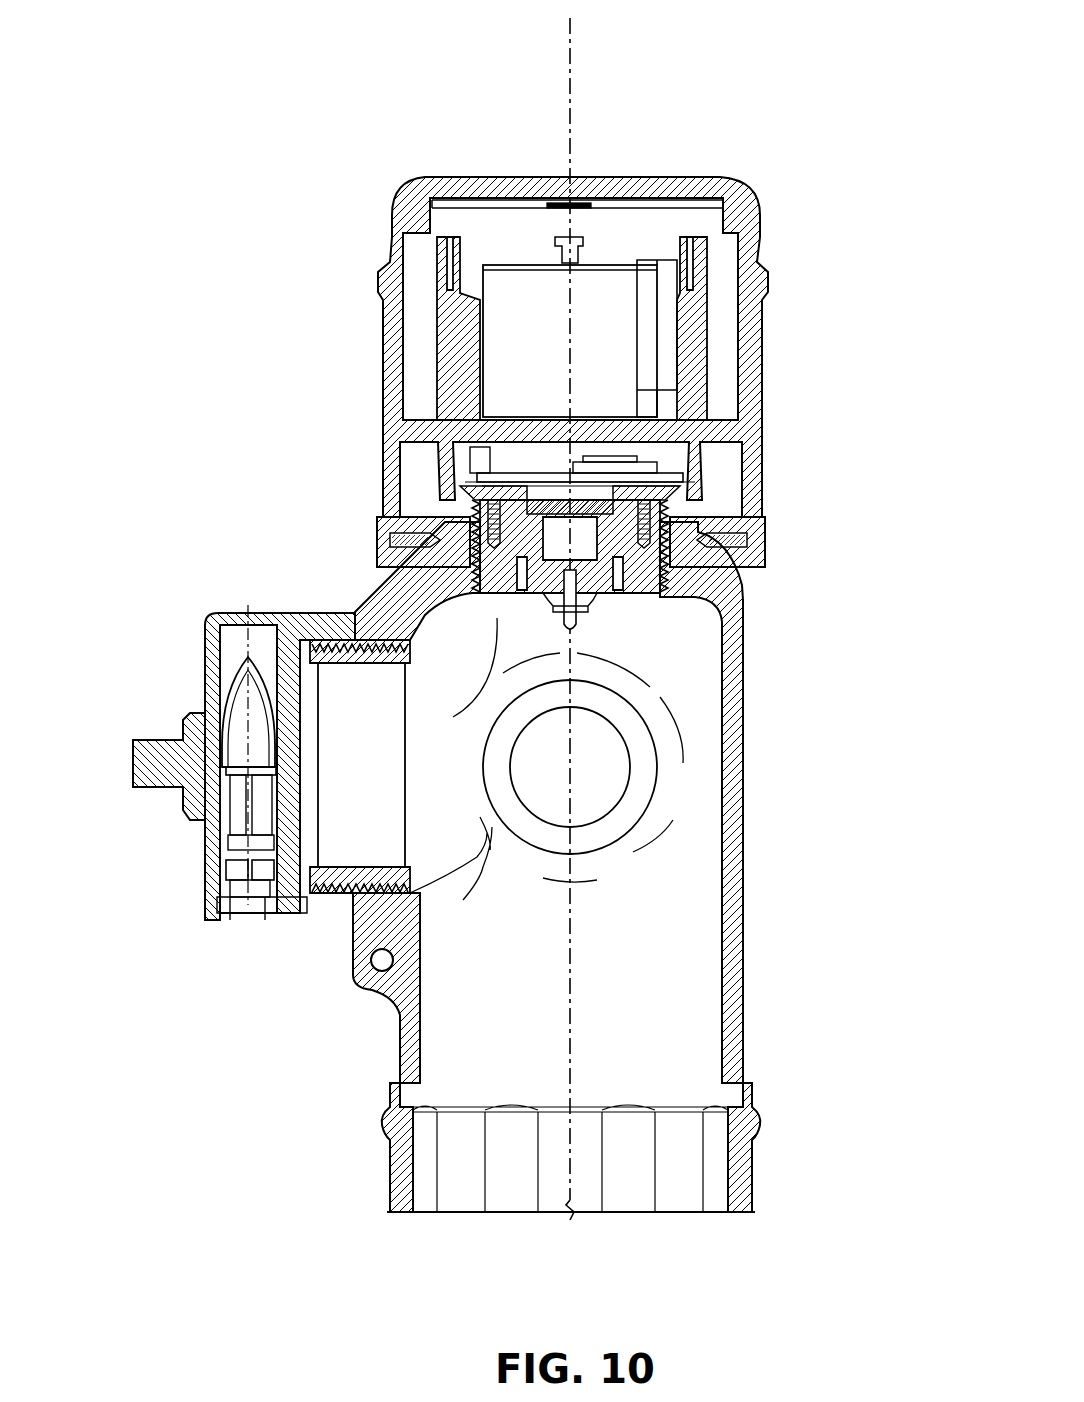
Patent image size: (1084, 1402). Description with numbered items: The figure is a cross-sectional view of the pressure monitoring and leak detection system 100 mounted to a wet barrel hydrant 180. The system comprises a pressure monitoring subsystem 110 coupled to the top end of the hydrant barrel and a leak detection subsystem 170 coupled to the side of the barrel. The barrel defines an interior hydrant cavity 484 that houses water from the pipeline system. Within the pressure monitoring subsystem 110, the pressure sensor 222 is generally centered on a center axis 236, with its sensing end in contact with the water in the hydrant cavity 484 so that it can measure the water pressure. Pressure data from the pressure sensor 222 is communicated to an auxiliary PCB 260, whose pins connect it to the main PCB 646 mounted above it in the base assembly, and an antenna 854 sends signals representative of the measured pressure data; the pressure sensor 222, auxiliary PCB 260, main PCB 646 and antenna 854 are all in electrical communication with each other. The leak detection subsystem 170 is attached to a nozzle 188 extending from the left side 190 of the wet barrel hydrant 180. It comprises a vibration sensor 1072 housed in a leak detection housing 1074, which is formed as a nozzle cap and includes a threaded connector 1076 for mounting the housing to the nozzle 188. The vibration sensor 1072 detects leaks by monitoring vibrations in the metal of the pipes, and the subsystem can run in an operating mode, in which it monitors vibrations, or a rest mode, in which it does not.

The pressure monitoring and leak detection system 100 is at (200, 276).
The pressure monitoring subsystem 110 is at (796, 146).
The antenna 854 is at (583, 203).
The center axis 236 is at (570, 55).
The main PCB 646 is at (700, 466).
The auxiliary PCB 260 is at (670, 512).
The pressure sensor 222 is at (580, 624).
The wet barrel hydrant 180 is at (826, 772).
The threaded connector 1076 is at (328, 628).
The nozzle 188 is at (340, 880).
The left side 190 is at (378, 915).
The hydrant cavity 484 is at (678, 905).
The leak detection subsystem 170 is at (148, 645).
The leak detection housing 1074 is at (190, 640).
The vibration sensor 1072 is at (232, 870).